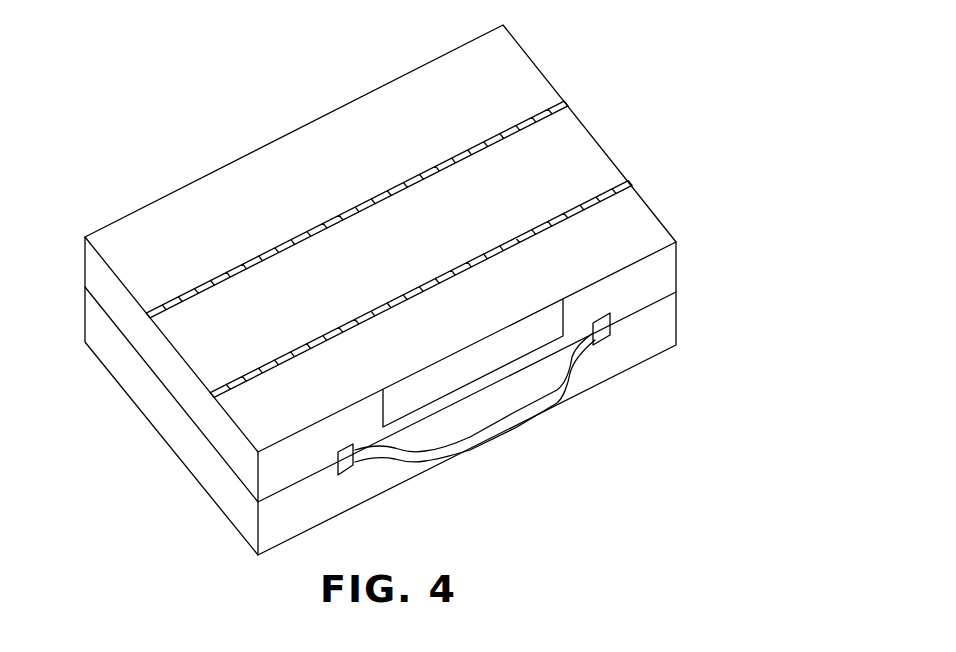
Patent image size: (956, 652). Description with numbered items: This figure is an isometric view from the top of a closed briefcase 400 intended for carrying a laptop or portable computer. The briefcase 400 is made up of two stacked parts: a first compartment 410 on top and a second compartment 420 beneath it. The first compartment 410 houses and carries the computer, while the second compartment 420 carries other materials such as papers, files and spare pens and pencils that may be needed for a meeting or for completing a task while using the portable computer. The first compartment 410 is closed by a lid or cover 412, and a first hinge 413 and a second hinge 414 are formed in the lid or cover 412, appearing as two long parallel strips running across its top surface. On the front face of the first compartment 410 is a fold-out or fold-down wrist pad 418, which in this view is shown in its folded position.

The briefcase 400 is at (740, 98).
The first compartment 410 is at (184, 385).
The lid or cover 412 is at (627, 223).
The first hinge 413 is at (483, 255).
The second hinge 414 is at (435, 168).
The wrist pad 418 is at (462, 373).
The second compartment 420 is at (208, 475).